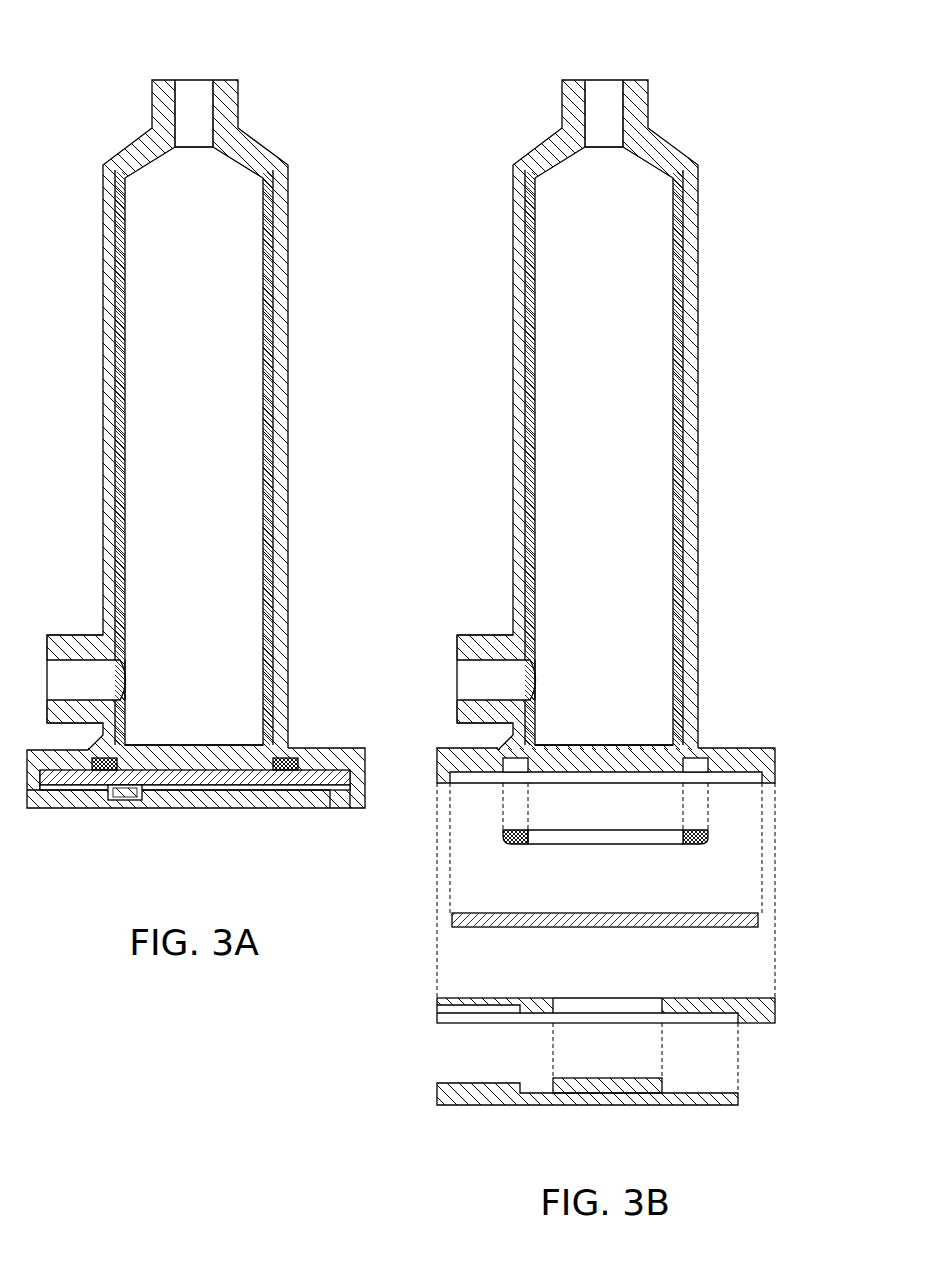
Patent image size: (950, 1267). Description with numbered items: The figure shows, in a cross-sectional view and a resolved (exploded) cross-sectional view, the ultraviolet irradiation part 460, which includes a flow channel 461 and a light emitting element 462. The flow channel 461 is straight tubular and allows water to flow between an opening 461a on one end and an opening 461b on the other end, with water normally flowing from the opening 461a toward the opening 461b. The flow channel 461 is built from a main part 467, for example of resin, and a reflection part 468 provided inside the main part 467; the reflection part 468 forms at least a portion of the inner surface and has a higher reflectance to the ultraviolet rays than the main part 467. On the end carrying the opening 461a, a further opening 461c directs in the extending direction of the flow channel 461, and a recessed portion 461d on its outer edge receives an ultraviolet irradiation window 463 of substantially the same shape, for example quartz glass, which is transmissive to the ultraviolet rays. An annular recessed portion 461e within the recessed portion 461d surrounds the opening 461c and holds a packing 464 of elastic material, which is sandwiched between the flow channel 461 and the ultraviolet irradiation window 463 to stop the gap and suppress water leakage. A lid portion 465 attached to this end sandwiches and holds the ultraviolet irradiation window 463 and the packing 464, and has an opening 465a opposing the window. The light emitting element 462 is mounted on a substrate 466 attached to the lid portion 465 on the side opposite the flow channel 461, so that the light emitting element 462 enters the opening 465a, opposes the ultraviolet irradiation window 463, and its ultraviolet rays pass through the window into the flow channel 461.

In FIG. 3A, the ultraviolet irradiation part 460 is at (229, 457).
In FIG. 3B, the ultraviolet irradiation part 460 is at (617, 588).
In FIG. 3A, the flow channel 461 is at (229, 415).
In FIG. 3B, the flow channel 461 is at (617, 402).
In FIG. 3A, the opening 461a is at (47, 680).
In FIG. 3B, the opening 461a is at (457, 678).
In FIG. 3A, the opening 461b is at (196, 80).
In FIG. 3B, the opening 461b is at (606, 80).
In FIG. 3A, the opening 461c is at (163, 775).
In FIG. 3B, the opening 461c is at (602, 772).
In FIG. 3A, the recessed portion 461d is at (337, 770).
In FIG. 3B, the recessed portion 461d is at (730, 780).
In FIG. 3A, the recessed portion 461e is at (290, 757).
In FIG. 3B, the recessed portion 461e is at (693, 765).
In FIG. 3A, the light emitting element 462 is at (193, 790).
In FIG. 3B, the light emitting element 462 is at (602, 1085).
In FIG. 3A, the ultraviolet irradiation window 463 is at (275, 777).
In FIG. 3B, the ultraviolet irradiation window 463 is at (640, 927).
In FIG. 3A, the packing 464 is at (100, 771).
In FIG. 3B, the packing 464 is at (515, 840).
In FIG. 3A, the lid portion 465 is at (335, 788).
In FIG. 3B, the lid portion 465 is at (636, 1018).
In FIG. 3B, the opening 465a is at (650, 1005).
In FIG. 3A, the substrate 466 is at (55, 795).
In FIG. 3B, the substrate 466 is at (500, 1105).
In FIG. 3A, the main part 467 is at (280, 258).
In FIG. 3B, the main part 467 is at (690, 258).
In FIG. 3A, the reflection part 468 is at (270, 308).
In FIG. 3B, the reflection part 468 is at (680, 308).